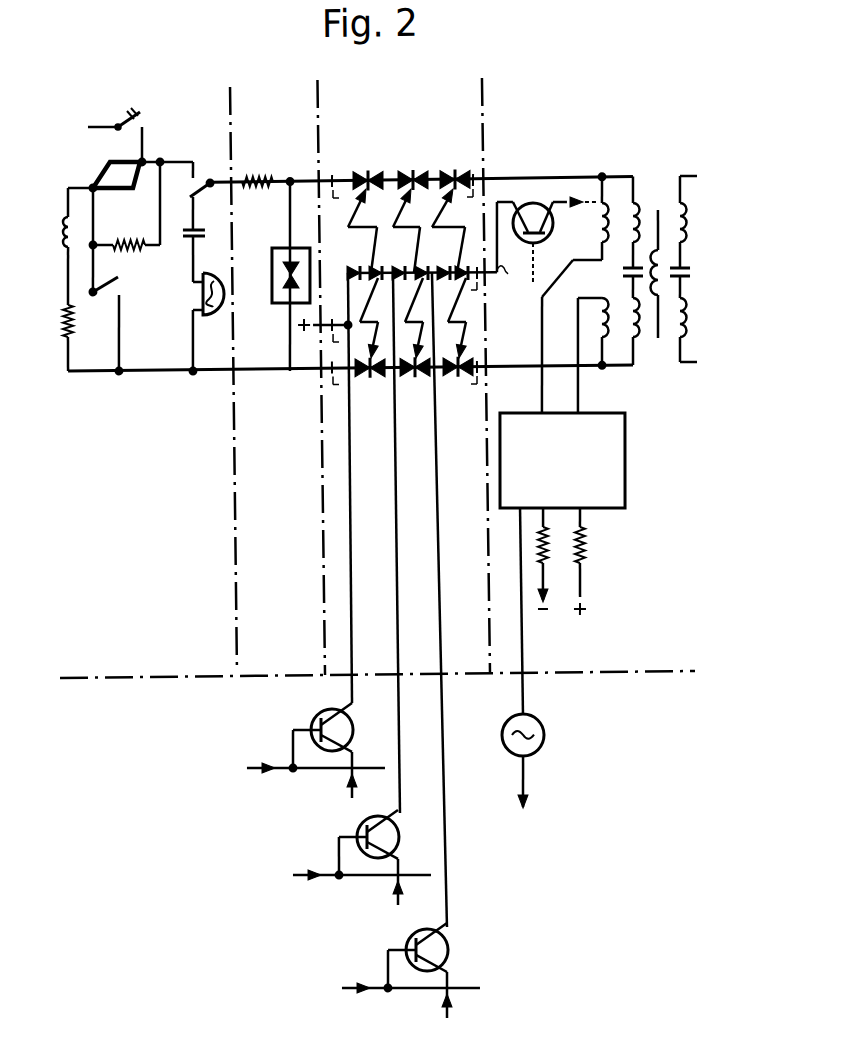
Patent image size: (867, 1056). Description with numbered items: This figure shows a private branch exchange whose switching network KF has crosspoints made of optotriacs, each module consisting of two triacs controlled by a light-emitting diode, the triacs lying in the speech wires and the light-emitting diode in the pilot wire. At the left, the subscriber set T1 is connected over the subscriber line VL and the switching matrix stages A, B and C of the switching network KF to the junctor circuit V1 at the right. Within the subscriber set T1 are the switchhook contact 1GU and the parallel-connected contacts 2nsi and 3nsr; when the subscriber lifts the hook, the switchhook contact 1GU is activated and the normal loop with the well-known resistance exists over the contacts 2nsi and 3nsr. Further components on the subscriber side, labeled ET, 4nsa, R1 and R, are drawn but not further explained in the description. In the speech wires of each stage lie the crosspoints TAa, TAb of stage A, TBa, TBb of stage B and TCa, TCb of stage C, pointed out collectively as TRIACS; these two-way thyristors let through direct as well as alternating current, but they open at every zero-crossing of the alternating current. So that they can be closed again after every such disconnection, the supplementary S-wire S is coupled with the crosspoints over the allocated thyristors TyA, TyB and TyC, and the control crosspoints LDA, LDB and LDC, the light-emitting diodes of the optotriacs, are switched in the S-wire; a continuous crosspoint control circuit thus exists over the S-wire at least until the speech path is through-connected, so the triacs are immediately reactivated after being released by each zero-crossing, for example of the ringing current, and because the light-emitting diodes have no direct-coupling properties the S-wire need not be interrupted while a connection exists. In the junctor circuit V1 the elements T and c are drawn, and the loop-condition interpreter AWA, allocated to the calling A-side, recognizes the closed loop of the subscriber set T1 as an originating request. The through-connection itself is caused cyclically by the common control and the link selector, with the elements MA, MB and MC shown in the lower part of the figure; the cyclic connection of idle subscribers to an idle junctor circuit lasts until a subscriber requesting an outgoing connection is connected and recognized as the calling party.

The subscriber set T1 is at (150, 372).
The earth (ground) switch ET is at (127, 135).
The parallel-connected contact 3nsr is at (127, 169).
The parallel-connected contact 2nsi is at (125, 206).
The switchhook contact 1GU is at (193, 268).
The switch contact nsa 4nsa is at (127, 309).
The resistor R1 is at (79, 338).
The return conductor R is at (212, 371).
The S-wire S is at (282, 180).
The subscriber line VL is at (291, 373).
The switching network KF is at (437, 372).
The triacs TRIACS is at (426, 133).
The switching matrix stage A is at (363, 409).
The switching matrix stage B is at (410, 464).
The switching matrix stage C is at (448, 521).
The speech-wire crosspoint triac TAa is at (366, 210).
The speech-wire crosspoint triac TBa is at (412, 210).
The speech-wire crosspoint triac TCa is at (451, 210).
The speech-wire crosspoint triac TAb is at (372, 384).
The speech-wire crosspoint triac TBb is at (417, 383).
The speech-wire crosspoint triac TCb is at (461, 383).
The control crosspoint light-emitting diode LDA is at (359, 260).
The control crosspoint light-emitting diode LDB is at (405, 260).
The control crosspoint light-emitting diode LDC is at (447, 261).
The control crosspoint thyristor TyA is at (364, 318).
The control crosspoint thyristor TyB is at (409, 318).
The control crosspoint thyristor TyC is at (453, 318).
The junctor circuit V1 is at (553, 171).
The transistor T is at (556, 240).
The collector terminal c is at (510, 282).
The loop-condition interpreter AWA is at (563, 563).
The transistor MA is at (315, 745).
The transistor MB is at (361, 852).
The transistor MC is at (410, 961).